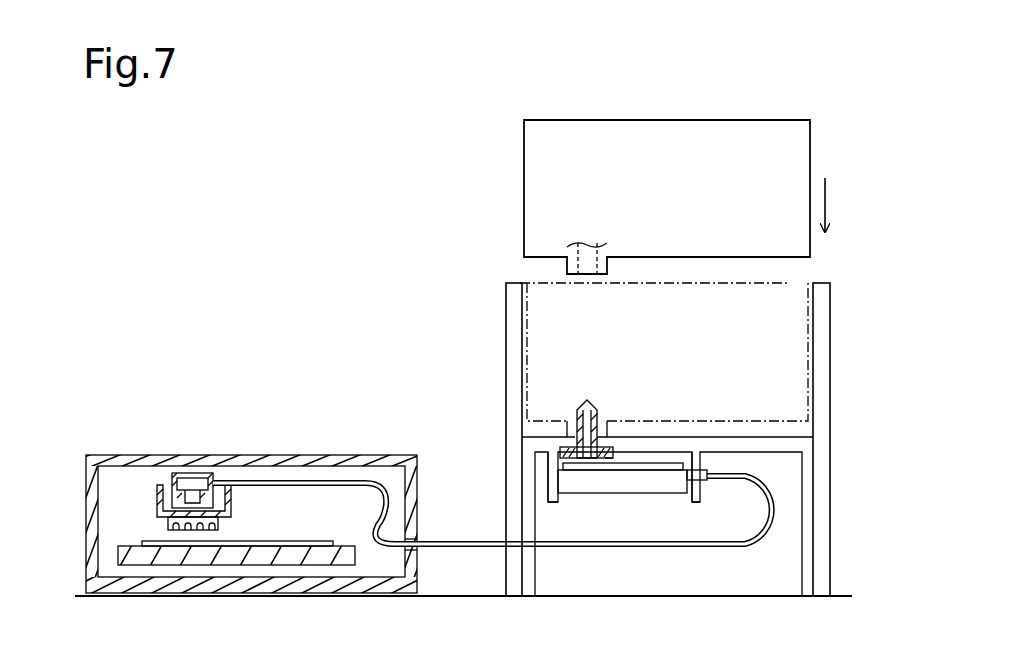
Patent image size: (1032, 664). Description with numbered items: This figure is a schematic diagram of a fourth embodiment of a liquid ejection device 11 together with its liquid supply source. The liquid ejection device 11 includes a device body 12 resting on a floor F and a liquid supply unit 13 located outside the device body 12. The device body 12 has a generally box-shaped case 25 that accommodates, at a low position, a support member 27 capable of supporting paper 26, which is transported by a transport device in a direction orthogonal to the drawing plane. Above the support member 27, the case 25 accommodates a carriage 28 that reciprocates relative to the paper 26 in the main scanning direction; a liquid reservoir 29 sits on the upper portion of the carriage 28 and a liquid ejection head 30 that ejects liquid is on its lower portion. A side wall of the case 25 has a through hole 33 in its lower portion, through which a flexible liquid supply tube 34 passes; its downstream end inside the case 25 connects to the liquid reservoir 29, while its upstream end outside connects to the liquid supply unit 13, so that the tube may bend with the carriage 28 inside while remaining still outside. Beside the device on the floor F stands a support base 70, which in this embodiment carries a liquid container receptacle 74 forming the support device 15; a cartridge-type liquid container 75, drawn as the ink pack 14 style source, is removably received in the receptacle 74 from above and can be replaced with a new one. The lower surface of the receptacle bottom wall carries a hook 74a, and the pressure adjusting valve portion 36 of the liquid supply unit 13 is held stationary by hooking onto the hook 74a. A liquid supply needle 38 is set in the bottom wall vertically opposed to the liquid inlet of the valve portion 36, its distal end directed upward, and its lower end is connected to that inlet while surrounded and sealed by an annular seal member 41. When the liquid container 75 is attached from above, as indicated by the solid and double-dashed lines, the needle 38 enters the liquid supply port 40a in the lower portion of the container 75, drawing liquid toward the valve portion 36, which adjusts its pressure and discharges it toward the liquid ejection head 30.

The liquid ejection device 11 is at (290, 318).
The device body 12 is at (170, 393).
The liquid supply unit 13 is at (627, 504).
The ink pack 14 is at (502, 122).
The support device 15 is at (696, 439).
The case 25 is at (113, 455).
The paper 26 is at (262, 540).
The support member 27 is at (347, 541).
The carriage 28 is at (157, 495).
The liquid reservoir 29 is at (200, 472).
The liquid ejection head 30 is at (168, 525).
The through hole 33 is at (418, 551).
The liquid supply tube 34 is at (464, 542).
The pressure adjusting valve portion 36 is at (640, 493).
The liquid supply needle 38 is at (587, 404).
The liquid supply port 40a is at (594, 262).
The seal member 41 is at (608, 462).
The support base 70 is at (832, 488).
The liquid container receptacle 74 is at (808, 336).
The hook 74a is at (703, 488).
The liquid container 75 is at (787, 283).
The floor F is at (840, 596).